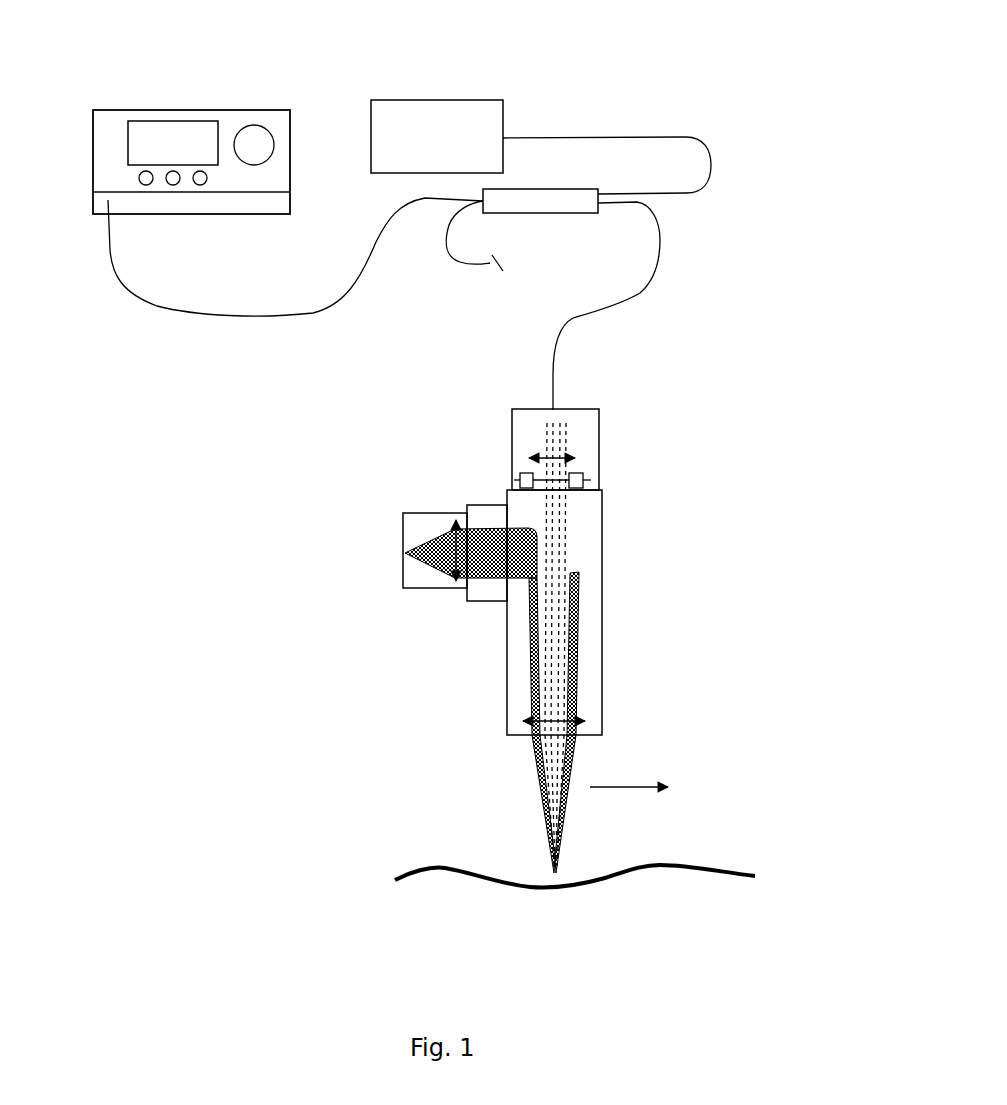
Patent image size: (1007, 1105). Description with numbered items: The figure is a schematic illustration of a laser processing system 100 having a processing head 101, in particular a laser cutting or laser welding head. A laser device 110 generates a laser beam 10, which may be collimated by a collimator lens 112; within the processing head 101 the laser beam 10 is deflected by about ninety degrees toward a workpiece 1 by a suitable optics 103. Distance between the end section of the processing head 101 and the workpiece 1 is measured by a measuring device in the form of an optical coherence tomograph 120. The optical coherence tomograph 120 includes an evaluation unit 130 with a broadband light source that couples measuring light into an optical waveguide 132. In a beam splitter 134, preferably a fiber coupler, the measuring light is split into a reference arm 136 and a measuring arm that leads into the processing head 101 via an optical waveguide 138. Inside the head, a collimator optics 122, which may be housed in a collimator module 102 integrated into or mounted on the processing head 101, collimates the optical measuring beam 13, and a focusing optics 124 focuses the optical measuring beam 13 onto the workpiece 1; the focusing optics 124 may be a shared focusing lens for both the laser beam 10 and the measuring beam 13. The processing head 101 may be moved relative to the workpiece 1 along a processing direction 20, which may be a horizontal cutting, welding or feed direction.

The laser processing system 100 is at (776, 41).
The evaluation unit 130 is at (197, 110).
The optical waveguide 132 is at (226, 315).
The beam splitter 134 is at (566, 213).
The reference arm 136 is at (590, 105).
The optical waveguide 138 is at (633, 297).
The optical coherence tomograph 120 is at (698, 272).
The collimator module 102 is at (500, 427).
The processing head 101 is at (602, 613).
The collimator optics 122 is at (577, 457).
The optical measuring beam 13 is at (560, 547).
The laser beam 10 is at (533, 638).
The optics 103 is at (571, 574).
The focusing optics 124 is at (587, 720).
The laser device 110 is at (383, 574).
The collimator lens 112 is at (452, 517).
The workpiece 1 is at (714, 868).
The processing direction 20 is at (632, 787).